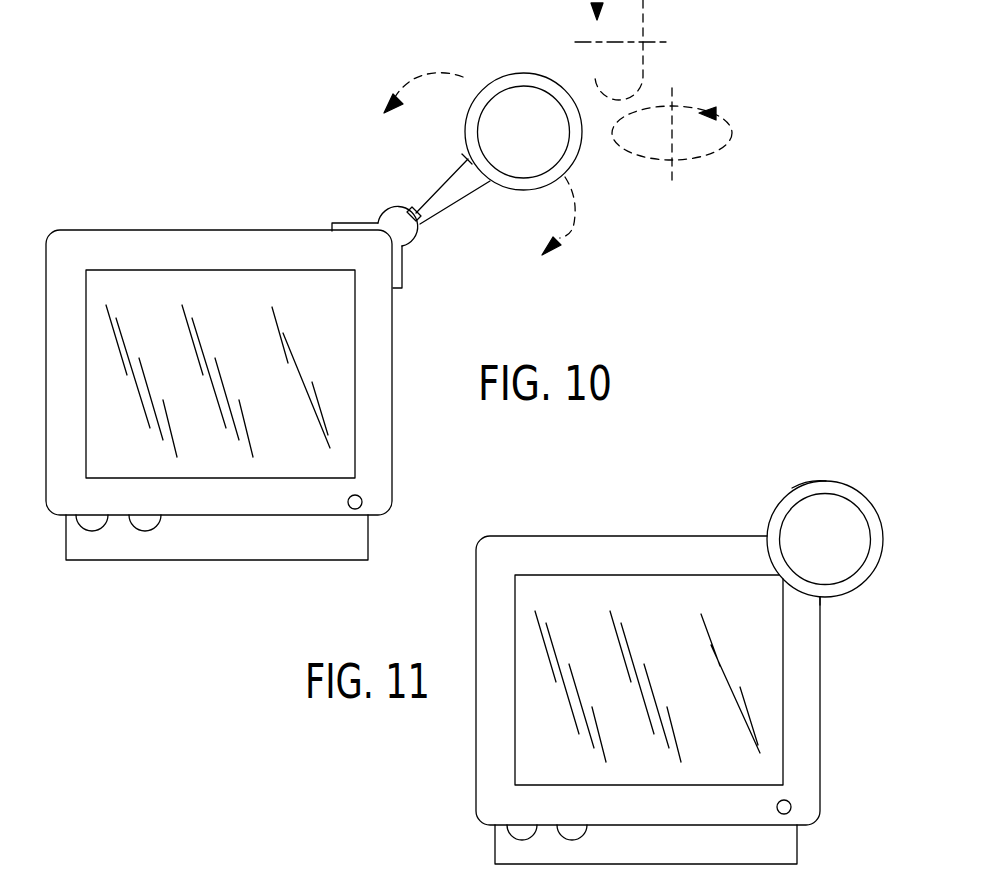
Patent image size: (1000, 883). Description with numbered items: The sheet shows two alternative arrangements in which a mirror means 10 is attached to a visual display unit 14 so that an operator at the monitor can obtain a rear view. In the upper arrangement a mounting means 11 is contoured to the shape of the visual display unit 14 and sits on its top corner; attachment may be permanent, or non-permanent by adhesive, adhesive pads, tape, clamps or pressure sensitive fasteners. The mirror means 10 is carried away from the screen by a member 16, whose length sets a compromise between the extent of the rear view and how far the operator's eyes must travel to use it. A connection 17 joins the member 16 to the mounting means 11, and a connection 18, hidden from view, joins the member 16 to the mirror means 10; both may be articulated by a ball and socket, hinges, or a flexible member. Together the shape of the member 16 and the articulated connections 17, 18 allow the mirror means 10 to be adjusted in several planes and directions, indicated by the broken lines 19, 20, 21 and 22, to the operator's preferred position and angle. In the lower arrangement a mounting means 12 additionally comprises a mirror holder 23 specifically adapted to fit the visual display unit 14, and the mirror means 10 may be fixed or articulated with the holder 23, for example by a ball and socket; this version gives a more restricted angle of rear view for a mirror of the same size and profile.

In FIG. 10, the mirror means 10 is at (555, 147).
In FIG. 11, the mirror means 10 is at (800, 520).
In FIG. 10, the mounting means 11 is at (402, 277).
In FIG. 11, the mounting means 12 is at (822, 598).
In FIG. 10, the visual display unit 14 is at (345, 425).
In FIG. 11, the visual display unit 14 is at (537, 752).
In FIG. 10, the member 16 is at (455, 193).
In FIG. 10, the connection 17 is at (383, 215).
In FIG. 10, the connection 18 is at (467, 158).
In FIG. 10, the broken lines 19 is at (412, 80).
In FIG. 10, the broken lines 20 is at (575, 233).
In FIG. 10, the broken lines 21 is at (645, 32).
In FIG. 10, the broken lines 22 is at (707, 157).
In FIG. 11, the mirror holder 23 is at (808, 490).